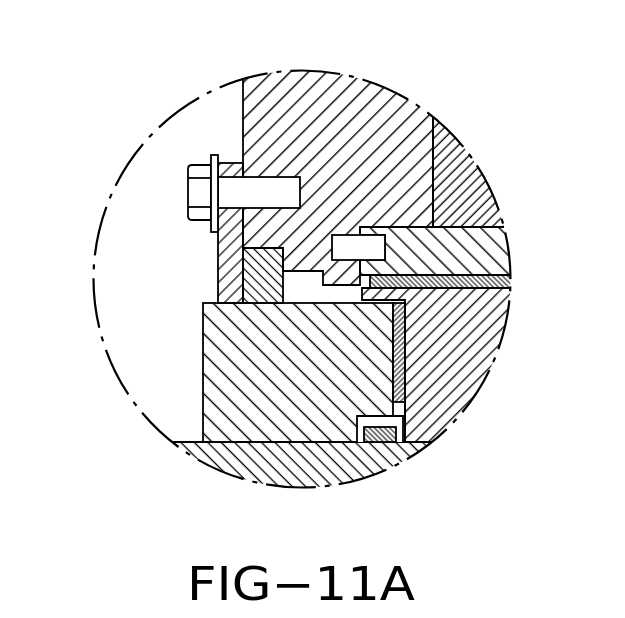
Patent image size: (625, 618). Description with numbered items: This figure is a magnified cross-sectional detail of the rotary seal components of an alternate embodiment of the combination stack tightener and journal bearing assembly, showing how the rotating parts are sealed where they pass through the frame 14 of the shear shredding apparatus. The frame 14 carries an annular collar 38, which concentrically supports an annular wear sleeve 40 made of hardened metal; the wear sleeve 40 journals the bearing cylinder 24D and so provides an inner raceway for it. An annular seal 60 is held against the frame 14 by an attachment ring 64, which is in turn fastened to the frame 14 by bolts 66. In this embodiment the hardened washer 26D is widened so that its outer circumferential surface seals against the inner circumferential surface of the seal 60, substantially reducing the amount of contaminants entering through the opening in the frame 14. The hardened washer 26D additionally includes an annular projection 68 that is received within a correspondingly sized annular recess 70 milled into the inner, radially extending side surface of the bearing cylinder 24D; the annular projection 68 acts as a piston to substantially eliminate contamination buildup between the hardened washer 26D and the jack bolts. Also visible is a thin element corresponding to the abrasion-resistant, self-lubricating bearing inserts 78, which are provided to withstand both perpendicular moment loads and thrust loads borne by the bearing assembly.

The frame 14 is at (243, 118).
The annular collar 38 is at (445, 175).
The annular wear sleeve 40 is at (485, 257).
The bearing cylinder 24D is at (485, 325).
The hardened washer 26D is at (223, 377).
The bearing inserts 78 is at (405, 348).
The annular projection 68 is at (398, 427).
The annular recess 70 is at (423, 483).
The attachment ring 64 is at (225, 249).
The annular seal 60 is at (257, 270).
The bolts 66 is at (196, 193).